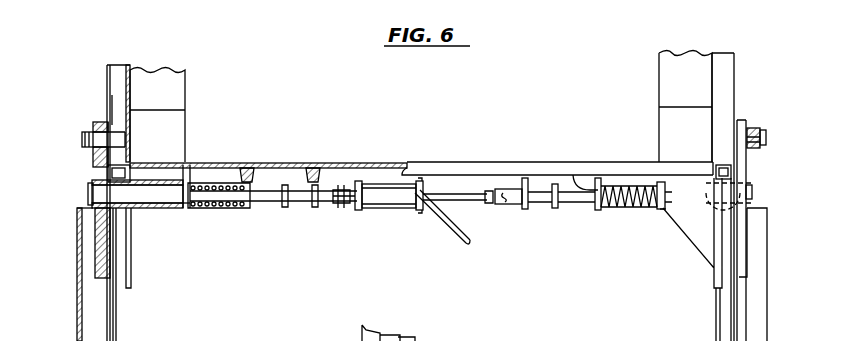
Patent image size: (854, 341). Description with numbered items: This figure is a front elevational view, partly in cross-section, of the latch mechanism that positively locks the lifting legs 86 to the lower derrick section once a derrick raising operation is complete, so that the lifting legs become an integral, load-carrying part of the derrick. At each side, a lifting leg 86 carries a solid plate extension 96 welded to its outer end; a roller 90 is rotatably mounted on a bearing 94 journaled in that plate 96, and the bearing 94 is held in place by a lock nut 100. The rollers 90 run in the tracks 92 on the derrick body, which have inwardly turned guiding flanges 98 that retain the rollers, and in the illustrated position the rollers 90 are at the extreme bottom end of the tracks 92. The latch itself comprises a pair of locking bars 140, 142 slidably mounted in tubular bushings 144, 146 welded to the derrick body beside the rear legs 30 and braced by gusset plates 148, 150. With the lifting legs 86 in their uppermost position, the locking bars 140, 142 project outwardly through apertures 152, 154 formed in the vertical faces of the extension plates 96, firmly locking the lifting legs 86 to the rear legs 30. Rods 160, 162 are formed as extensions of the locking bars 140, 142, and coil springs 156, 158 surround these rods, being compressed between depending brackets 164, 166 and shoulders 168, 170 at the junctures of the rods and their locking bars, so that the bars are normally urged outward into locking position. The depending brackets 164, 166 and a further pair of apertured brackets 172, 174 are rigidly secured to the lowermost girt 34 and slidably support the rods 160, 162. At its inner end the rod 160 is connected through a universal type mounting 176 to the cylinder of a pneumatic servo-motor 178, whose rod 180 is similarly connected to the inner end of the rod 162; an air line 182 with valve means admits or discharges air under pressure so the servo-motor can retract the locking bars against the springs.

The rear legs 30 is at (162, 78).
The tracks 92 is at (116, 73).
The rollers 90 is at (116, 118).
The bearing 94 is at (100, 142).
The lock nuts 100 is at (86, 130).
The lowermost girt 34 is at (428, 173).
The aperture 152 is at (92, 185).
The solid plate extension 96 is at (96, 243).
The lifting legs 86 is at (94, 323).
The gusset plate 148 is at (133, 264).
The bushing 144 is at (178, 203).
The locking bar 140 is at (180, 203).
The coil spring 156 is at (207, 183).
The shoulder 168 is at (208, 207).
The rod 160 is at (270, 199).
The depending bracket 164 is at (250, 178).
The apertured bracket 172 is at (316, 178).
The universal type mounting 176 is at (338, 200).
The pneumatic servo-motor 178 is at (376, 200).
The air line 182 is at (452, 225).
The rod 180 is at (462, 200).
The apertured bracket 174 is at (526, 180).
The rod 162 is at (570, 197).
The depending bracket 166 is at (573, 175).
The coil spring 158 is at (636, 186).
The shoulder 170 is at (663, 187).
The bushing 146 is at (657, 209).
The gusset plate 150 is at (692, 230).
The aperture 154 is at (713, 196).
The locking bar 142 is at (750, 190).
The guiding flanges 98 is at (366, 333).